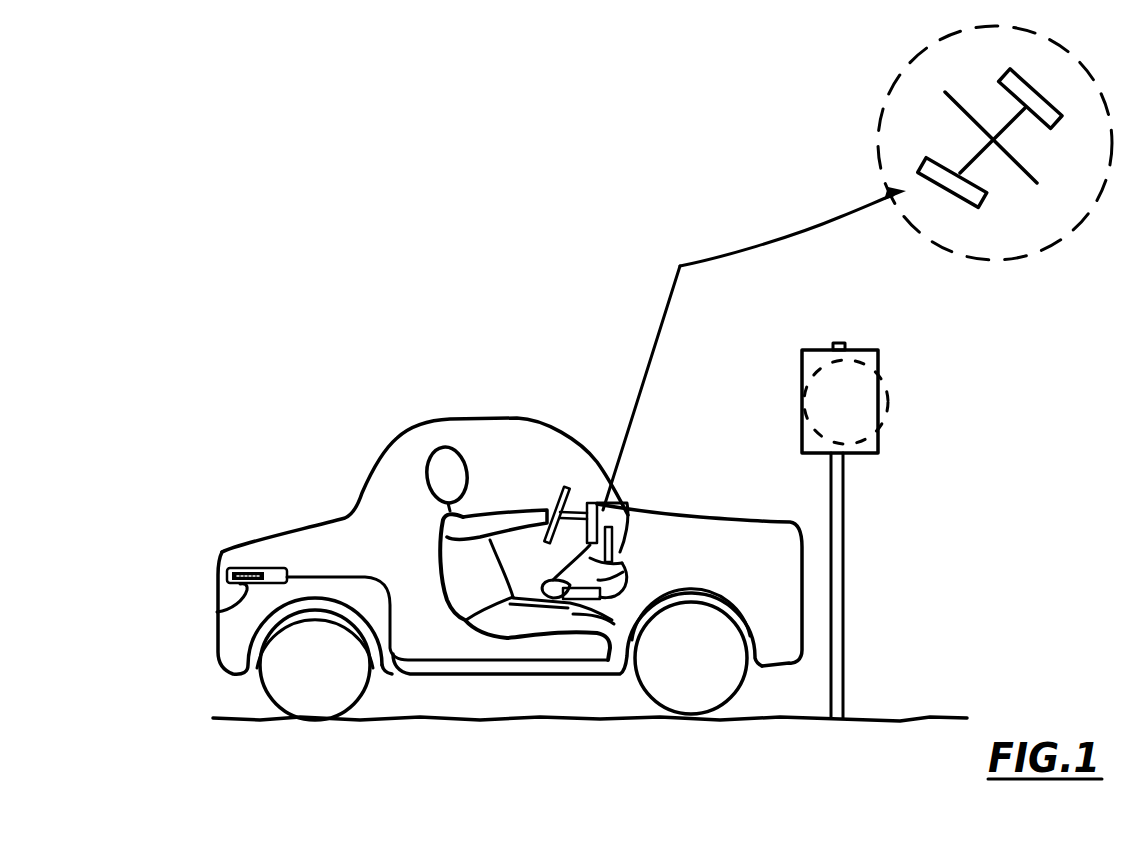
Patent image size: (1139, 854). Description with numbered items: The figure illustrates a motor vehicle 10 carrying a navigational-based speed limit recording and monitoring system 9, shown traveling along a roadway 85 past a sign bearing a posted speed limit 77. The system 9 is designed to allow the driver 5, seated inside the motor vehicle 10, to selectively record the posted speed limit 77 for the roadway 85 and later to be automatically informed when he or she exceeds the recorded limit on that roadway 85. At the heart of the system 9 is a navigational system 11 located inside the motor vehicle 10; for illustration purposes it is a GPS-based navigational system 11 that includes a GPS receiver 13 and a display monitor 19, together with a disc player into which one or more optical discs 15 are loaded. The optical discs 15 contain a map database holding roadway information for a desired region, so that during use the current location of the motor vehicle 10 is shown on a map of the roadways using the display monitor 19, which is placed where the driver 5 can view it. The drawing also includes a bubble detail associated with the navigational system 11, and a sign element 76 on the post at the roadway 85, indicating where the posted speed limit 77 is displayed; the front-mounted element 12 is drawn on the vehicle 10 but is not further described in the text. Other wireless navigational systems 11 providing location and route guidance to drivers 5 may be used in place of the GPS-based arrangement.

The navigational-based speed limit recording and monitoring system 9 is at (452, 183).
The navigational system 11 is at (680, 266).
The motor vehicle 10 is at (219, 551).
The front-mounted sensor/receiver 12 is at (273, 569).
The optical disc 15 is at (217, 612).
The driver 5 is at (426, 495).
The display monitor 19 is at (597, 527).
The GPS receiver 13 is at (623, 572).
The speed limit sign 76 is at (864, 341).
The posted speed limit 77 is at (883, 412).
The roadway 85 is at (865, 708).